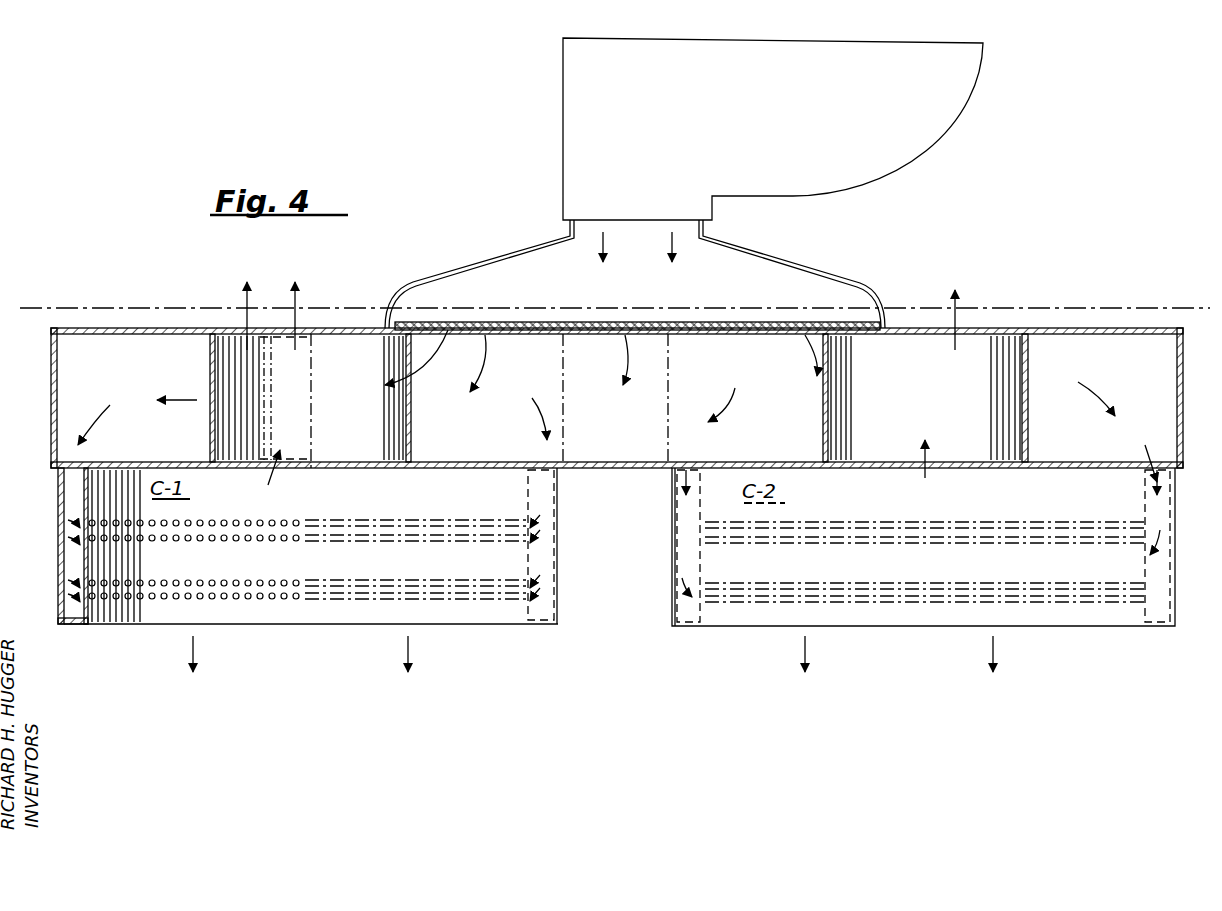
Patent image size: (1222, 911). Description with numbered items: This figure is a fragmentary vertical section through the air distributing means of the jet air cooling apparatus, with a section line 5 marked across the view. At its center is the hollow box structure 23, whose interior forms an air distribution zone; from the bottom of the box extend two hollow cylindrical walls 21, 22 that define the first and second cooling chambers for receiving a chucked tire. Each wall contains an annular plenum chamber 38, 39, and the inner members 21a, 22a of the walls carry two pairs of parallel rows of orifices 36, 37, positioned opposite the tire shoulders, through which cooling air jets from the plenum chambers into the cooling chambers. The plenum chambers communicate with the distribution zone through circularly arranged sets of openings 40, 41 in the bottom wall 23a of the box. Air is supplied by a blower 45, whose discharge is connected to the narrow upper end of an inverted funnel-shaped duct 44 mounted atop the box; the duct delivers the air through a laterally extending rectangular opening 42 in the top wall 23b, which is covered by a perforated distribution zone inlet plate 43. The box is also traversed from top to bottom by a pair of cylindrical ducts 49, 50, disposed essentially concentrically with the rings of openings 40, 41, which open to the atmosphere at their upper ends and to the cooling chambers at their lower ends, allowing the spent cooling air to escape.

The section line 5- 5 is at (37, 326).
The hollow cylindrical wall 21 is at (72, 624).
The inner member 21a is at (96, 598).
The hollow cylindrical wall 22 is at (680, 626).
The inner member 22a is at (1142, 614).
The hollow box structure 23 is at (52, 402).
The bottom wall 23a is at (436, 462).
The top wall 23b is at (993, 330).
The orifices 36 is at (210, 582).
The orifices 37 is at (966, 522).
The plenum chamber 38 is at (60, 478).
The plenum chamber 39 is at (690, 540).
The openings 40 is at (77, 465).
The openings 41 is at (692, 468).
The rectangular opening 42 is at (862, 336).
The perforated plate 43 is at (730, 322).
The inverted funnel-shaped duct 44 is at (850, 272).
The blower 45 is at (884, 158).
The cylindrical duct 49 is at (215, 398).
The cylindrical duct 50 is at (832, 412).